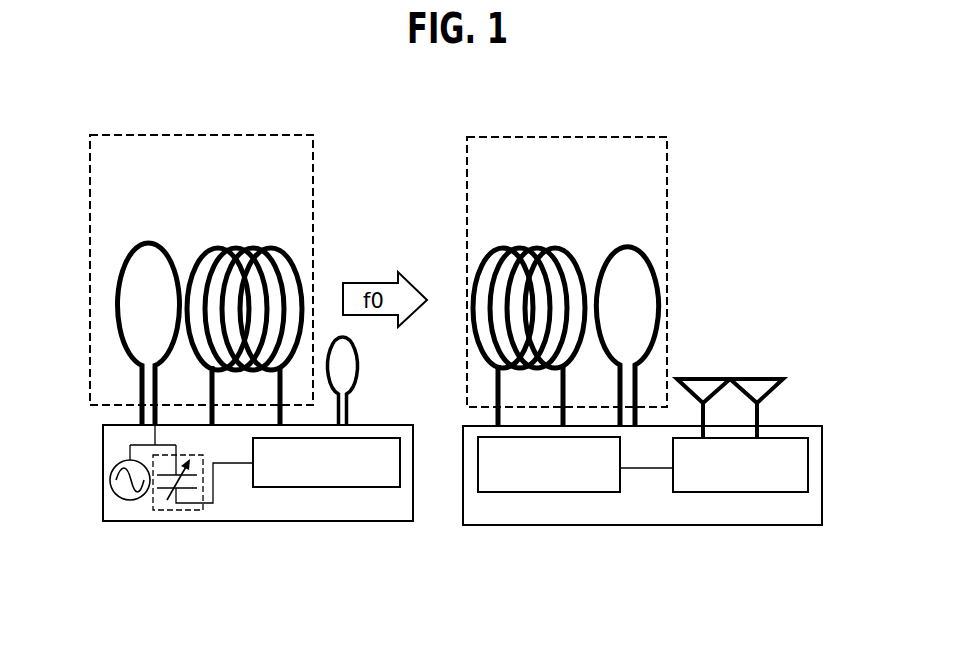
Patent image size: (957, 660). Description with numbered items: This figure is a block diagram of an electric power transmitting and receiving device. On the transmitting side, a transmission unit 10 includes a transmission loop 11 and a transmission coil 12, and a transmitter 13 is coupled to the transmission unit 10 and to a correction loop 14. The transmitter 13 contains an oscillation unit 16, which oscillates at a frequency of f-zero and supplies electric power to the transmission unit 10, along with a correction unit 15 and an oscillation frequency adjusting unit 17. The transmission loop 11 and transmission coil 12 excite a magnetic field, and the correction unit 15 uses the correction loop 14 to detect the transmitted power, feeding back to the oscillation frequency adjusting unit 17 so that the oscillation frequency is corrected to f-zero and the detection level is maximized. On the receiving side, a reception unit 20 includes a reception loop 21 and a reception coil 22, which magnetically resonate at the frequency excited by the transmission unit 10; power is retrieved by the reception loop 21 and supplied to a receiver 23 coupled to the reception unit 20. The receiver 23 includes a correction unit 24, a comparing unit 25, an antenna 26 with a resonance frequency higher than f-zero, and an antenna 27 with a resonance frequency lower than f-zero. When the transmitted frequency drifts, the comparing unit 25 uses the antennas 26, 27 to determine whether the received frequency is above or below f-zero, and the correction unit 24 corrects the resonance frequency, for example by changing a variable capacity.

The transmission unit 10 is at (313, 192).
The transmission loop 11 is at (117, 290).
The transmission coil 12 is at (210, 248).
The transmitter 13 is at (103, 500).
The correction loop 14 is at (356, 375).
The correction unit 15 is at (378, 487).
The oscillation unit 16 is at (125, 500).
The oscillation frequency adjusting unit 17 is at (182, 510).
The reception unit 20 is at (667, 237).
The reception loop 21 is at (613, 248).
The reception coil 22 is at (530, 248).
The receiver 23 is at (822, 505).
The correction unit 24 is at (532, 492).
The comparing unit 25 is at (720, 492).
The antenna 26 is at (710, 379).
The antenna 27 is at (767, 379).